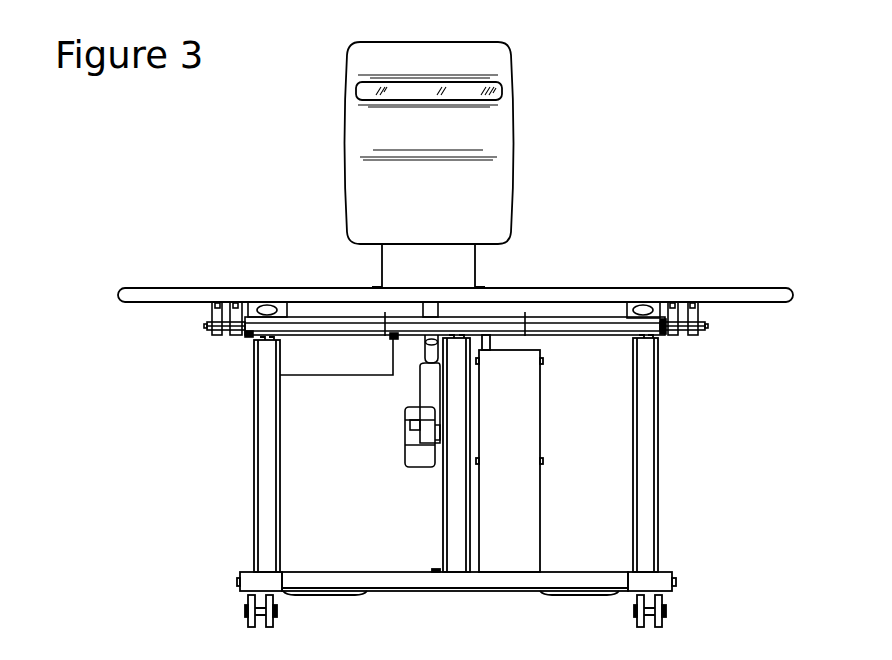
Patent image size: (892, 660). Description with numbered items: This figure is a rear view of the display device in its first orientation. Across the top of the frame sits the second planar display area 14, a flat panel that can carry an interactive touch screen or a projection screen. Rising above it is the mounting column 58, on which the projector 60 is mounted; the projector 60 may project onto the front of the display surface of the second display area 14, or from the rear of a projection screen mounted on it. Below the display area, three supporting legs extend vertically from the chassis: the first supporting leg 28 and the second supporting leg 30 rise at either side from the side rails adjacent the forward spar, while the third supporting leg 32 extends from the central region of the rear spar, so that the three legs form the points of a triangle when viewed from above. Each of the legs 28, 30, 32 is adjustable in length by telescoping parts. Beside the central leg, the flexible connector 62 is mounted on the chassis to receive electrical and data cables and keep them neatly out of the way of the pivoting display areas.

The second planar display area 14 is at (755, 290).
The first supporting leg 28 is at (270, 470).
The second supporting leg 30 is at (643, 428).
The third supporting leg 32 is at (443, 520).
The mounting column 58 is at (387, 268).
The projector 60 is at (493, 62).
The flexible connector 62 is at (527, 512).